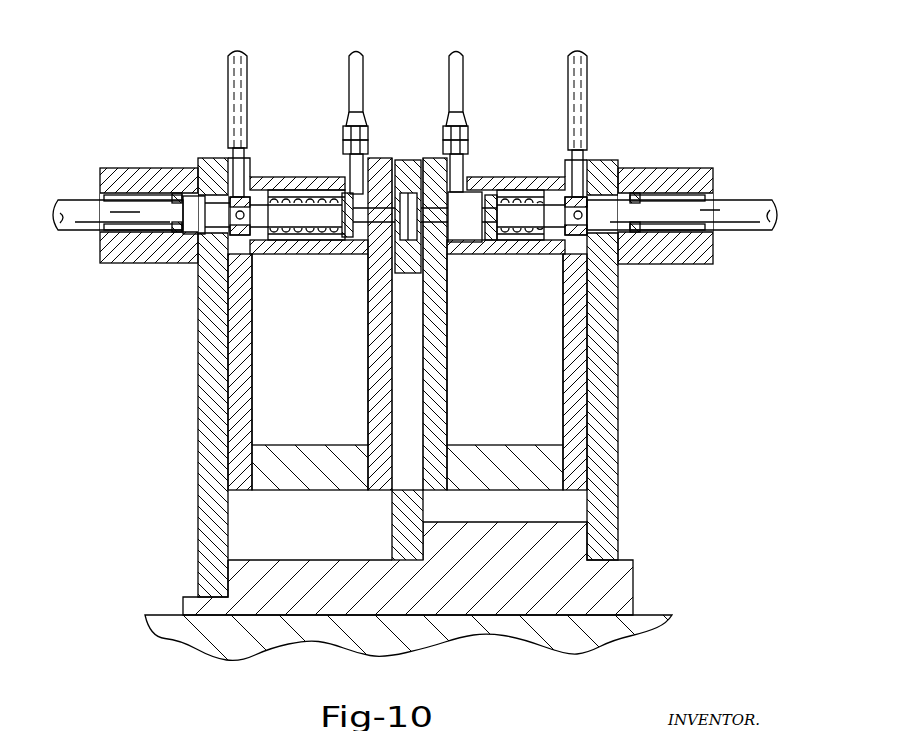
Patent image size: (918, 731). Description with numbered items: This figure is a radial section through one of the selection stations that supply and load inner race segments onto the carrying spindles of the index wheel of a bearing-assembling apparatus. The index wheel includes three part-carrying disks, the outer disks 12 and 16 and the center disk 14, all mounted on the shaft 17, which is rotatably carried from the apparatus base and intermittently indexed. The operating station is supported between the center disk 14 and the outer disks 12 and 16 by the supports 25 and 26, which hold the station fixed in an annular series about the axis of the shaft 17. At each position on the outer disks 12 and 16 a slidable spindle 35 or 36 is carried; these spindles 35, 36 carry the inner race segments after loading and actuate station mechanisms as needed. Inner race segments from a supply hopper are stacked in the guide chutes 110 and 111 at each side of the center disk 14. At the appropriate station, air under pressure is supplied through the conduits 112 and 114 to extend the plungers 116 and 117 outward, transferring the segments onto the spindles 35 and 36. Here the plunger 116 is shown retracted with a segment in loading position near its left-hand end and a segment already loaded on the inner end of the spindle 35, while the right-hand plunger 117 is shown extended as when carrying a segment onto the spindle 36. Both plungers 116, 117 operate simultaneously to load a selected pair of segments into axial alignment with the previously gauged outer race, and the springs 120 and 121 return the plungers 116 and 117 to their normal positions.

The part-carrying disk 12 is at (202, 465).
The center disk 14 is at (407, 523).
The part-carrying disk 16 is at (614, 462).
The shaft 17 is at (351, 630).
The support 25 is at (243, 402).
The support 26 is at (442, 404).
The spindle 35 is at (68, 211).
The spindle 36 is at (727, 211).
The guide chute 110 is at (247, 61).
The guide chute 111 is at (594, 61).
The conduit 112 is at (367, 61).
The conduit 114 is at (469, 61).
The plunger 116 is at (255, 210).
The plunger 117 is at (557, 209).
The spring 120 is at (297, 254).
The spring 121 is at (517, 254).